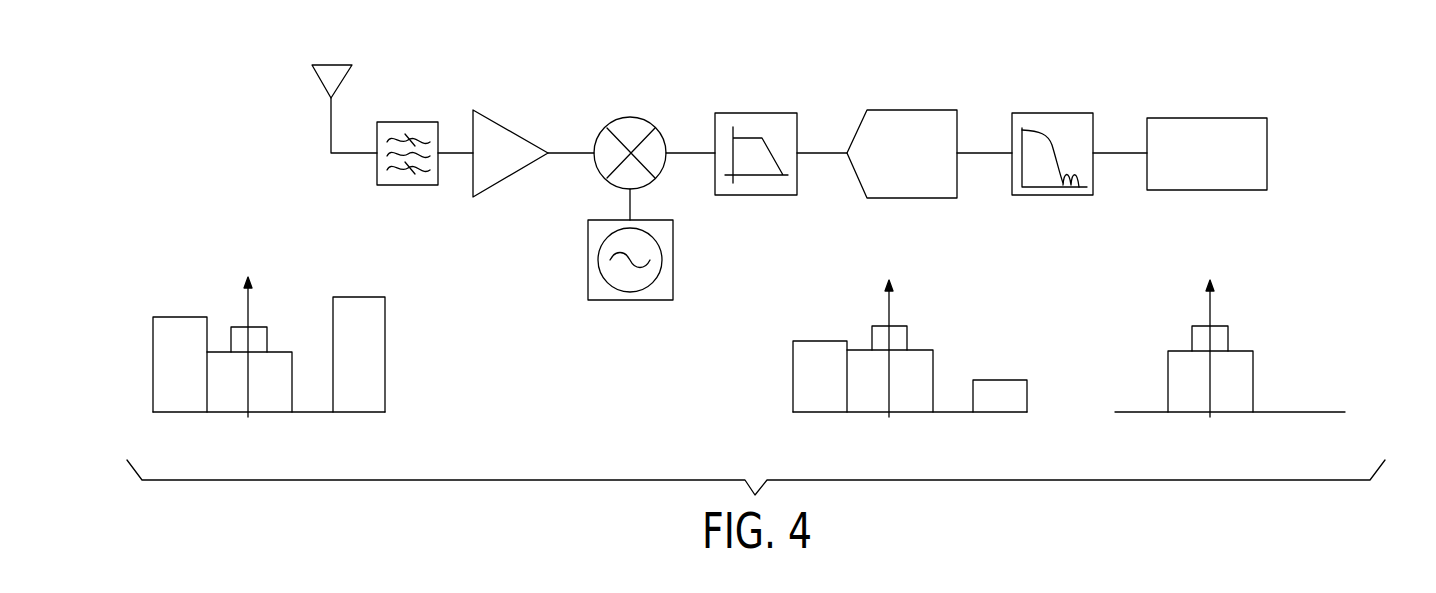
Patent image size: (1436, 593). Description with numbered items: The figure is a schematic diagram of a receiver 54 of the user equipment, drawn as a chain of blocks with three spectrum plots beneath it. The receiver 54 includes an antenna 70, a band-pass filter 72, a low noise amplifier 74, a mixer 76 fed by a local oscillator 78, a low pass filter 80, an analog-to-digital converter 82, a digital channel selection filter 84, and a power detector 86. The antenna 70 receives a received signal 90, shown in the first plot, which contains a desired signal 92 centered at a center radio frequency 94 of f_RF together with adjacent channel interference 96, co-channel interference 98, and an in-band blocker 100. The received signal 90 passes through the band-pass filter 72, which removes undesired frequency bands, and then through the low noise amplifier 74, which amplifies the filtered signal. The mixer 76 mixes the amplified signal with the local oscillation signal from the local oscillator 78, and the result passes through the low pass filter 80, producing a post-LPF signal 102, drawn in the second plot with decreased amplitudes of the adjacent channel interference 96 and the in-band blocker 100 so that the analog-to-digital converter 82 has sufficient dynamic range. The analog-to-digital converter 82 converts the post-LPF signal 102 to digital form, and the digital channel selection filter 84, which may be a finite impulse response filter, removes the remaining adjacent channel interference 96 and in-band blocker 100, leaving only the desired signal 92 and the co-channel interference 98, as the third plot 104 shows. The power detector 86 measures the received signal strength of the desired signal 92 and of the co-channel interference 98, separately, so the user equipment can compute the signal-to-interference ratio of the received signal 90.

The receiver 54 is at (1023, 45).
The antenna 70 is at (331, 65).
The band-pass filter 72 is at (412, 122).
The low noise amplifier 74 is at (512, 130).
The mixer 76 is at (630, 118).
The local oscillator 78 is at (673, 260).
The low pass filter 80 is at (757, 113).
The analog-to-digital converter 82 is at (915, 110).
The digital channel selection filter 84 is at (1057, 113).
The power detector 86 is at (1210, 118).
The received signal 90 is at (378, 428).
The desired signal 92 is at (292, 380).
The center radio frequency 94 is at (248, 313).
The adjacent channel interference 96 is at (153, 367).
The co-channel interference 98 is at (267, 332).
The in-band blocker 100 is at (385, 352).
The post-LPF signal 102 is at (812, 428).
The digitally filtered spectrum plot 104 is at (1130, 428).